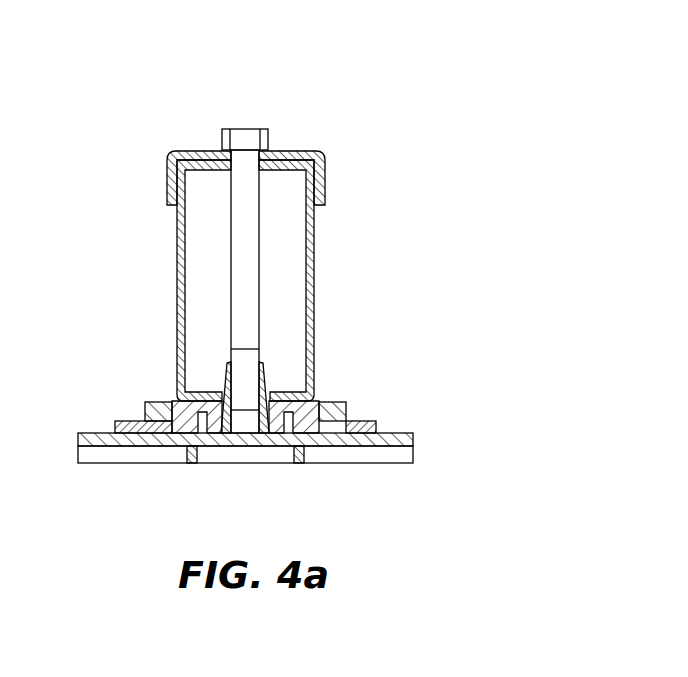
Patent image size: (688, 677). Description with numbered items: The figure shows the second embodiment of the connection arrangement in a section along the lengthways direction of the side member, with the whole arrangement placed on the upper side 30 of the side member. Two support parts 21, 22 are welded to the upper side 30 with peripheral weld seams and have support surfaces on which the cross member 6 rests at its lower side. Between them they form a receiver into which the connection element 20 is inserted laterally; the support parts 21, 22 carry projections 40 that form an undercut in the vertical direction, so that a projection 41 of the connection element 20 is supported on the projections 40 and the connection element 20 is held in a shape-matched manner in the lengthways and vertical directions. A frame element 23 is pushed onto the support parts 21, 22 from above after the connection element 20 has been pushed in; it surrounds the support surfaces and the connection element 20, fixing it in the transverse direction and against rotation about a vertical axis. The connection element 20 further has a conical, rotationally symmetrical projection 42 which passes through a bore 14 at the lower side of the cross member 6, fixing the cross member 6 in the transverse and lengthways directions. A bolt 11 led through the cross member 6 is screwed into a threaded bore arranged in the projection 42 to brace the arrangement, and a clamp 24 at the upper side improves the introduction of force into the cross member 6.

The bolt 11 is at (237, 138).
The clamp 24 is at (293, 152).
The cross member 6 is at (312, 252).
The projection 42 is at (267, 368).
The bore 14 is at (273, 387).
The projections 40 is at (283, 412).
The frame element 23 is at (143, 412).
The support part 22 is at (117, 430).
The upper side 30 is at (262, 462).
The support part 21 is at (362, 434).
The connection element 20 is at (222, 434).
The projection 41 is at (268, 434).